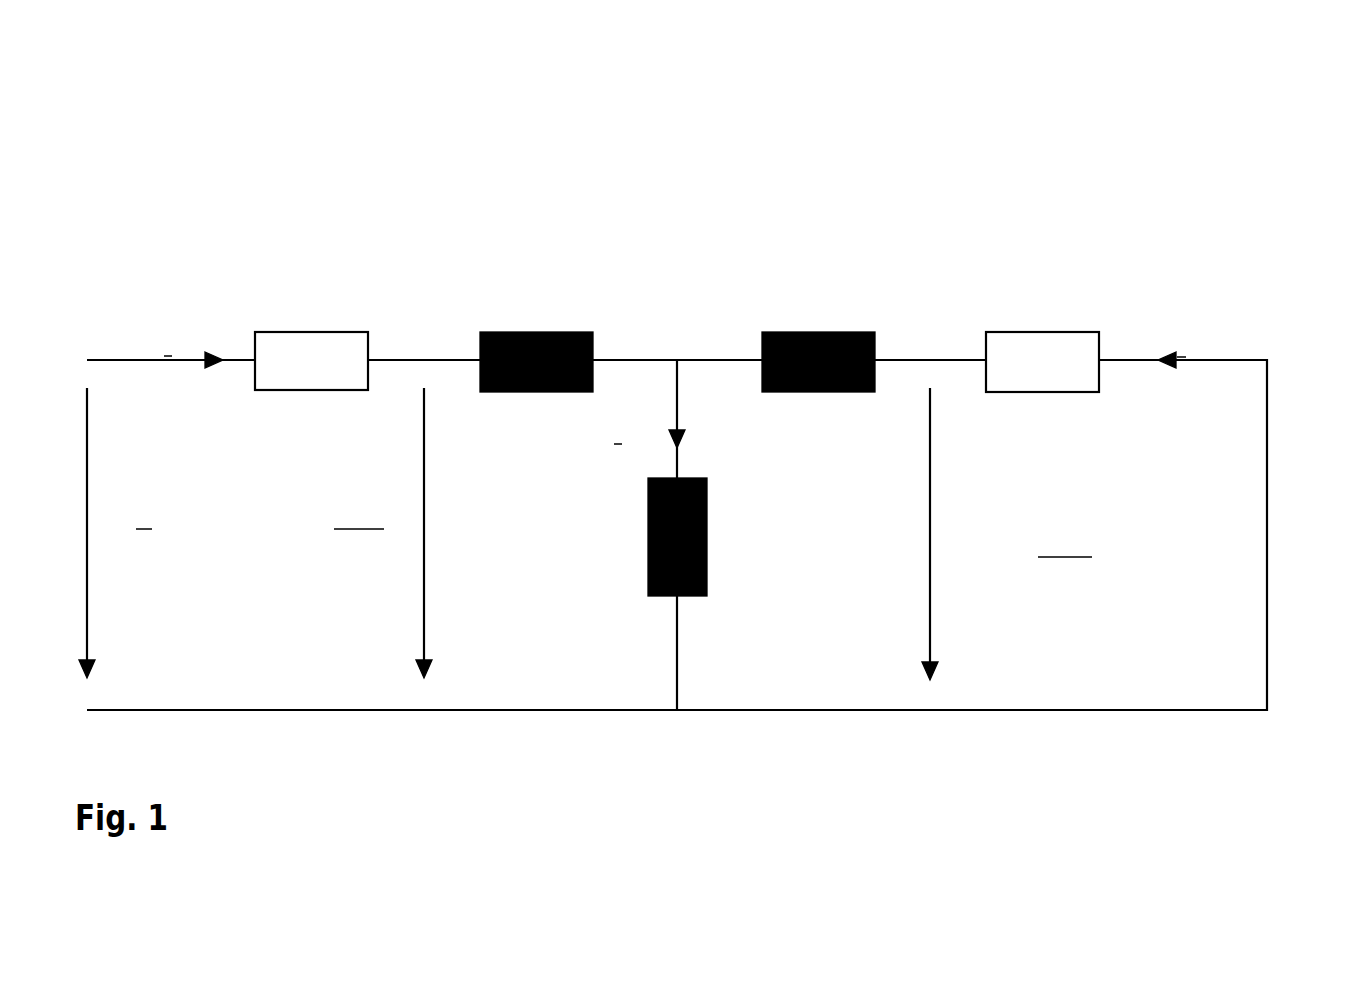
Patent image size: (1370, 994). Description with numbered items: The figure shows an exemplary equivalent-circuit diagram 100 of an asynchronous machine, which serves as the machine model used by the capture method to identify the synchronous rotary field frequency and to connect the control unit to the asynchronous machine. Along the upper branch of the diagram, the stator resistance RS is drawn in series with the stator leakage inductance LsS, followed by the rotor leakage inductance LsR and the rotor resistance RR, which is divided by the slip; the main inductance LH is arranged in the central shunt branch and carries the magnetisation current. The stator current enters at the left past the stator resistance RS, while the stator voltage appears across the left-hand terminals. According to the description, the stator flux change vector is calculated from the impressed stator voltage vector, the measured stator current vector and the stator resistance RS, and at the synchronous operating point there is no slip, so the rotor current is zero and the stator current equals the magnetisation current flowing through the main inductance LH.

The equivalent-circuit diagram 100 is at (724, 395).
The stator resistance RS is at (311, 340).
The stator leakage inductance LsS is at (536, 344).
The rotor leakage inductance LsR is at (818, 344).
The rotor resistance divided by slip RR is at (1042, 342).
The main inductance LH is at (647, 537).